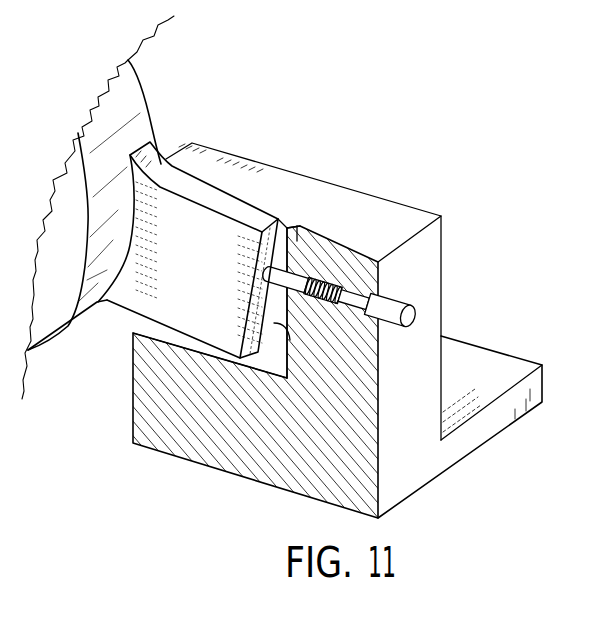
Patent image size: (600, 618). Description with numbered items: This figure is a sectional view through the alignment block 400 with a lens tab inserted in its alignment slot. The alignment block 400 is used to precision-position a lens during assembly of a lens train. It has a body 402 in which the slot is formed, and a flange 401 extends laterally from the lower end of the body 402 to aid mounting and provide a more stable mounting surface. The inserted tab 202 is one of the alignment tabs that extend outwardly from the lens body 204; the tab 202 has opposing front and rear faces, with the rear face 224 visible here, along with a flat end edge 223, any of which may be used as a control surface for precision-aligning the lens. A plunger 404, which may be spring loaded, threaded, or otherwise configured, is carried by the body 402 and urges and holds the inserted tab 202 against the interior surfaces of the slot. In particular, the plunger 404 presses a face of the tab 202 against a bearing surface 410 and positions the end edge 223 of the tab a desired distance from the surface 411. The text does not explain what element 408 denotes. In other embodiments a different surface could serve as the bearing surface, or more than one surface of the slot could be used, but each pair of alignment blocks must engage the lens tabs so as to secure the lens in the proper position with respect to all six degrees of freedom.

The tab 202 is at (122, 308).
The lens body 204 is at (143, 81).
The rear face 224 is at (192, 227).
The end edge 223 is at (270, 244).
The alignment block 400 is at (408, 109).
The flange 401 is at (493, 368).
The body 402 is at (285, 168).
The plunger 404 is at (417, 313).
The threaded portion 408 is at (322, 278).
The bearing surface 410 is at (270, 352).
The surface 411 is at (290, 338).